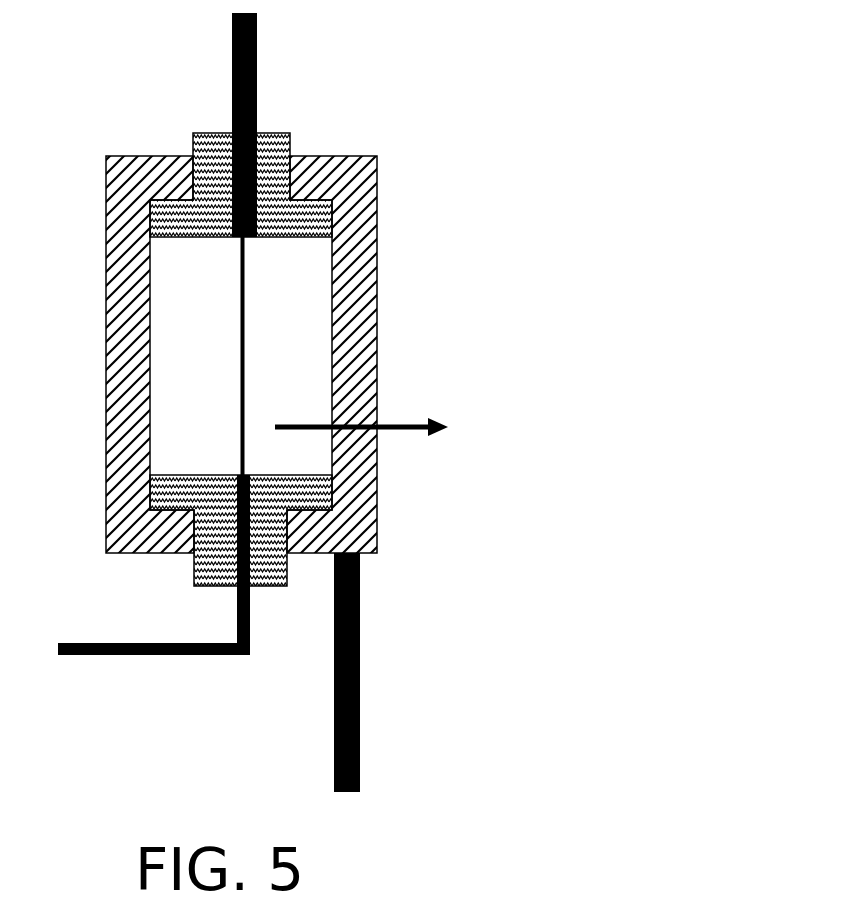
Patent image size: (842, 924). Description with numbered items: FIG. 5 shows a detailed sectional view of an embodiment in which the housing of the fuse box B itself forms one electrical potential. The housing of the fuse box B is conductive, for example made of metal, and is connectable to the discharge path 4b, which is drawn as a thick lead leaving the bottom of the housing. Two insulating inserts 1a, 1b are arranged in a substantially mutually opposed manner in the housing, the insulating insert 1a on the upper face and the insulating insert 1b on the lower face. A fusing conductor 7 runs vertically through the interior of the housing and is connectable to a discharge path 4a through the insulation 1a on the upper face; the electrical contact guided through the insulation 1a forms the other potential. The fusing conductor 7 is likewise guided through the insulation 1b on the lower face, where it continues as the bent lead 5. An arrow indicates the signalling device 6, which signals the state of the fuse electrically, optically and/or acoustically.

The fuse box B is at (355, 268).
The insulating insert 1a is at (272, 213).
The insulating insert 1b is at (273, 493).
The discharge path 4a is at (260, 80).
The discharge path 4b is at (375, 695).
The bent lead conductor 5 is at (258, 597).
The signalling device 6 is at (437, 412).
The fusing conductor 7 is at (260, 375).